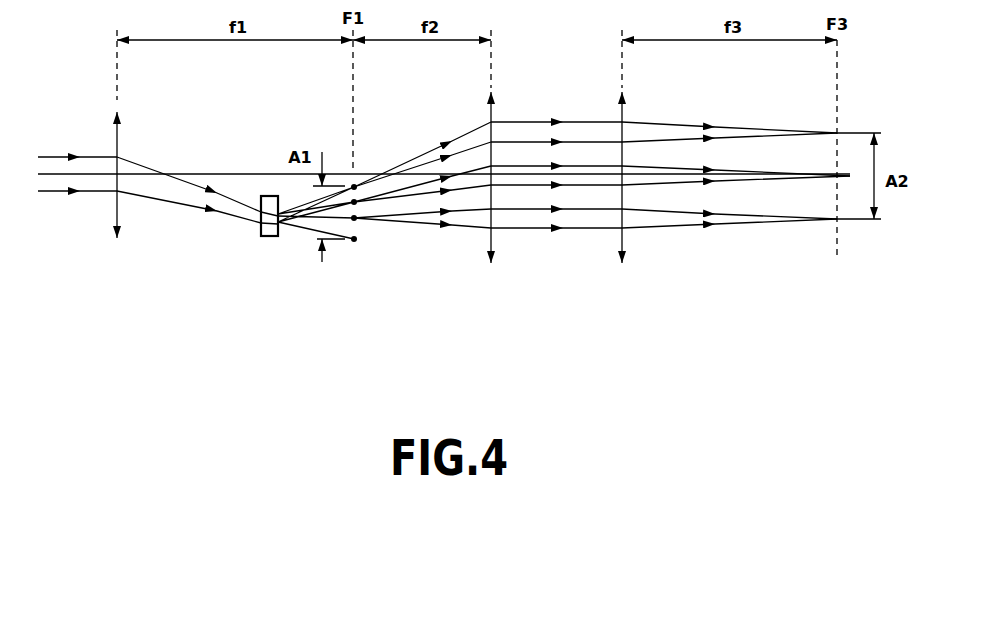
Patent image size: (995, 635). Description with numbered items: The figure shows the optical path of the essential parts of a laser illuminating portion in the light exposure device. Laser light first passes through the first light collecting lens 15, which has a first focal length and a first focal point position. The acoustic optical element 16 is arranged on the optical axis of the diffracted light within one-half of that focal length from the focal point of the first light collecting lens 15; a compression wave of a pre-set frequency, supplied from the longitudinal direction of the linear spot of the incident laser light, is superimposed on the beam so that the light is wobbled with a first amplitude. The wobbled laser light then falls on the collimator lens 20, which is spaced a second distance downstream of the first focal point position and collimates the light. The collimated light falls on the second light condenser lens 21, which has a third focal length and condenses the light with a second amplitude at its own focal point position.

The first light collecting lens 15 is at (117, 205).
The acoustic optical element 16 is at (266, 236).
The collimator lens 20 is at (491, 237).
The second light condenser lens 21 is at (623, 237).